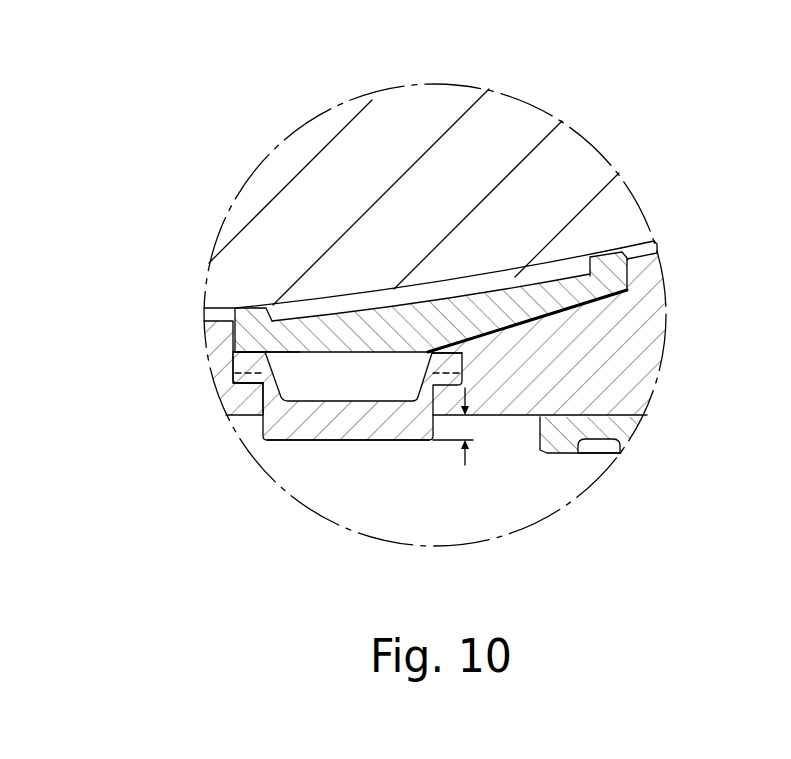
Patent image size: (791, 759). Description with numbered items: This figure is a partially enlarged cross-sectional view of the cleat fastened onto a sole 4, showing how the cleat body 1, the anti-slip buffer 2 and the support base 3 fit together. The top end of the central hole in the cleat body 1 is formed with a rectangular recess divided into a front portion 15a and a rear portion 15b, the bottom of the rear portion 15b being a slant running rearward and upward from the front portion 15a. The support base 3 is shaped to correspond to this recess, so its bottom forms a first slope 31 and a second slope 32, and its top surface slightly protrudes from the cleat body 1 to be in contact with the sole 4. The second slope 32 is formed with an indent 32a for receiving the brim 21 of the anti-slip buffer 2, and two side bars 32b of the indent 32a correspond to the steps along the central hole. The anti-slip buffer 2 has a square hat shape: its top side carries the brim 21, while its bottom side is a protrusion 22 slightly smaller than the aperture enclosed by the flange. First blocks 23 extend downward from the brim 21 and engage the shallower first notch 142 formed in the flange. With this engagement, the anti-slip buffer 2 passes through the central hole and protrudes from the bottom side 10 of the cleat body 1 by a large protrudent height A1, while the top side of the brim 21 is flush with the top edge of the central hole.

The cleat body 1 is at (622, 384).
The anti-slip buffer 2 is at (353, 442).
The support base 3 is at (387, 320).
The sole 4 is at (355, 297).
The bottom side 10 is at (531, 417).
The front portion 15a is at (321, 345).
The first slope 31 is at (229, 224).
The rear portion 15b is at (585, 345).
The brim 21 is at (247, 364).
The protrusion 22 is at (302, 428).
The first blocks 23 is at (247, 385).
The second slope 32 is at (594, 47).
The indent 32a is at (543, 325).
The side bars 32b is at (588, 300).
The first notch 142 is at (247, 373).
The large protrudent height A1 is at (473, 426).